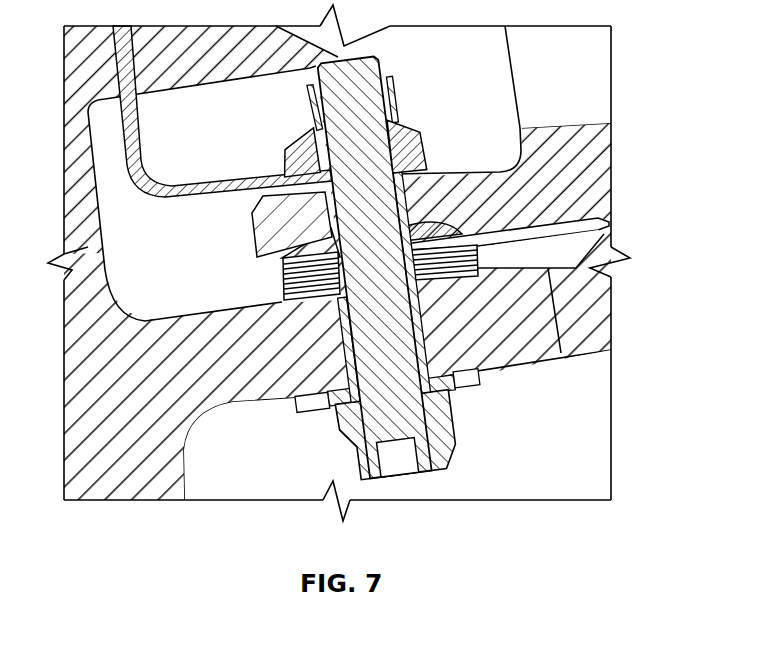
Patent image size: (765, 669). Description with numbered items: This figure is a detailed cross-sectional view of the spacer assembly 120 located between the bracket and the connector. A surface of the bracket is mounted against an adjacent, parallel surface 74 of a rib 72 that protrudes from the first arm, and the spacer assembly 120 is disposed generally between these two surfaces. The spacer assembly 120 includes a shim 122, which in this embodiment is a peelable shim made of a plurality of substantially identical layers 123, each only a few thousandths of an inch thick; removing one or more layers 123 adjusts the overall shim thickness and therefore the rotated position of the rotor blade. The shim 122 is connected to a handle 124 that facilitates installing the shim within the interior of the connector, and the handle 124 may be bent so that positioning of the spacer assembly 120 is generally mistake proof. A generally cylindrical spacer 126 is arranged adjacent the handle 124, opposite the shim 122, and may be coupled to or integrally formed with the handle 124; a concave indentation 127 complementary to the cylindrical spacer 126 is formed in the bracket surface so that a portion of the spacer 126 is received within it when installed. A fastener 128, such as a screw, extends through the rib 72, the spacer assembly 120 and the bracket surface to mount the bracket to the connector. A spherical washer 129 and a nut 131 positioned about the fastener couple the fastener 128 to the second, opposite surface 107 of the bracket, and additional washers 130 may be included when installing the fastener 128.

The rib 72 is at (542, 308).
The surface of the rib 74 is at (227, 311).
The second surface of the bracket 107 is at (443, 173).
The spacer assembly 120 is at (540, 145).
The shim 122 is at (266, 277).
The layers 123 is at (485, 255).
The handle 124 is at (609, 223).
The cylindrical spacer 126 is at (423, 223).
The concave indentation 127 is at (327, 231).
The fastener 128 is at (437, 420).
The spherical washer 129 is at (420, 142).
The washers 130 is at (333, 410).
The nut 131 is at (307, 120).